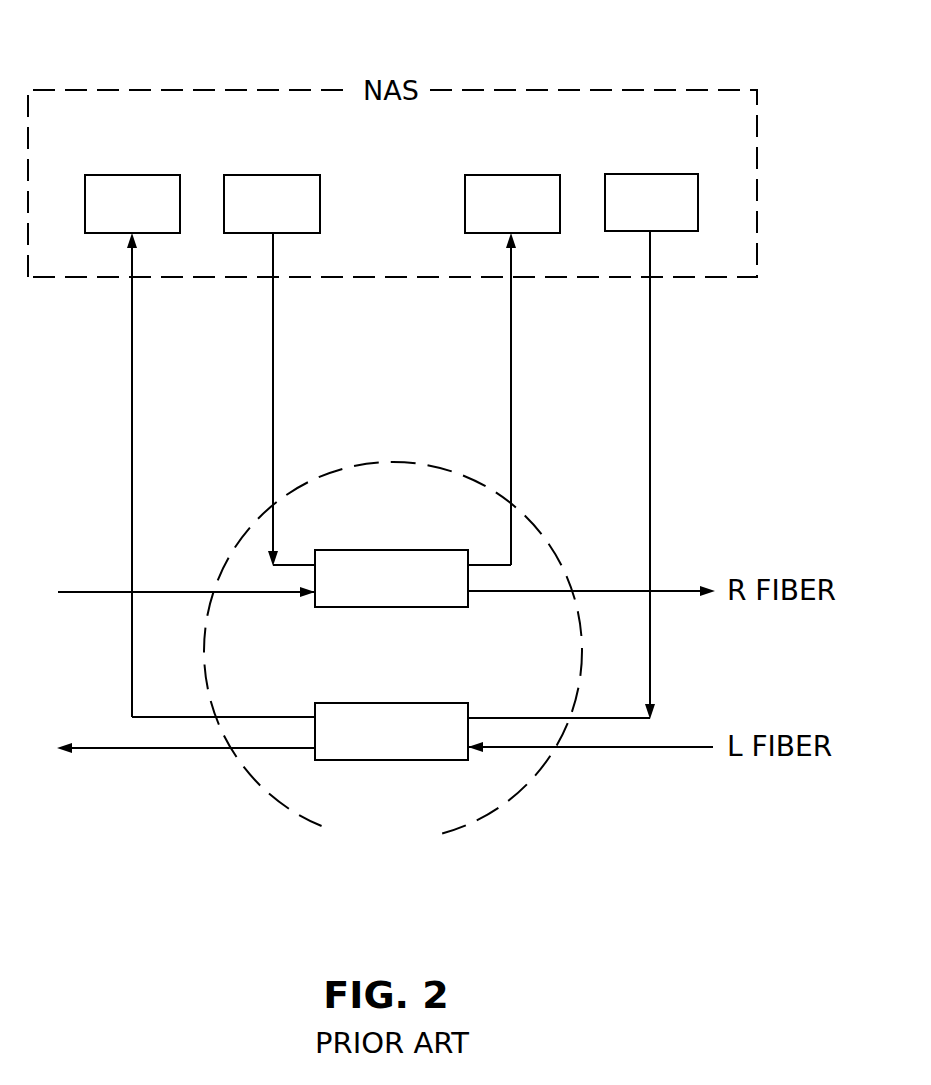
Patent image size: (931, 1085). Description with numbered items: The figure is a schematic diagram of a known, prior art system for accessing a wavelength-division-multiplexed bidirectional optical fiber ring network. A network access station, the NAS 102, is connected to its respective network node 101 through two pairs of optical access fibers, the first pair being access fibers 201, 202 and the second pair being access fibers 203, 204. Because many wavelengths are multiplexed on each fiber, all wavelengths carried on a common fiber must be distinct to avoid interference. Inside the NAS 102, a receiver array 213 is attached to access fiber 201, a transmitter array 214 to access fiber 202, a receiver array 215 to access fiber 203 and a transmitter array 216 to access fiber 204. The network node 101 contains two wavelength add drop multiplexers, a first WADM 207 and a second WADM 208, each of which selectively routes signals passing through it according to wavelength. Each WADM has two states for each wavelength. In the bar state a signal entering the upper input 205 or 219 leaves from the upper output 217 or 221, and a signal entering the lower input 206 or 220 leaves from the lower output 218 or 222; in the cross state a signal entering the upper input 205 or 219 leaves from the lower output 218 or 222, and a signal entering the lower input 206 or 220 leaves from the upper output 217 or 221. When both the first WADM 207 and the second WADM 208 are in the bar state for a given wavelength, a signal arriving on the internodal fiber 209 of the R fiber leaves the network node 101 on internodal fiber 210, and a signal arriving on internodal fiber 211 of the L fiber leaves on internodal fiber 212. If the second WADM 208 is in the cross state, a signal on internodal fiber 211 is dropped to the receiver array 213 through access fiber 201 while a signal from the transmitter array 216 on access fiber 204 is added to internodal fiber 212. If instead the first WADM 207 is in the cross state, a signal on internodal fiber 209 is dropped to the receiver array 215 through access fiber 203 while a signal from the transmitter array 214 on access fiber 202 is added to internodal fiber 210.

The network node 101 is at (563, 788).
The NAS 102 is at (615, 87).
The access fiber 201 is at (132, 330).
The access fiber 202 is at (273, 330).
The access fiber 203 is at (512, 330).
The access fiber 204 is at (650, 330).
The upper input 205 is at (298, 562).
The lower input 206 is at (313, 599).
The first WADM 207 is at (372, 608).
The second WADM 208 is at (418, 702).
The internodal fiber 209 is at (102, 591).
The internodal fiber 210 is at (668, 589).
The internodal fiber 211 is at (668, 744).
The internodal fiber 212 is at (125, 752).
The receiver array 213 is at (135, 174).
The transmitter array 214 is at (283, 174).
The receiver array 215 is at (510, 174).
The transmitter array 216 is at (648, 173).
The upper output 217 is at (482, 562).
The lower output 218 is at (473, 593).
The upper input 219 is at (470, 716).
The lower input 220 is at (472, 751).
The upper output 221 is at (313, 715).
The lower output 222 is at (312, 749).